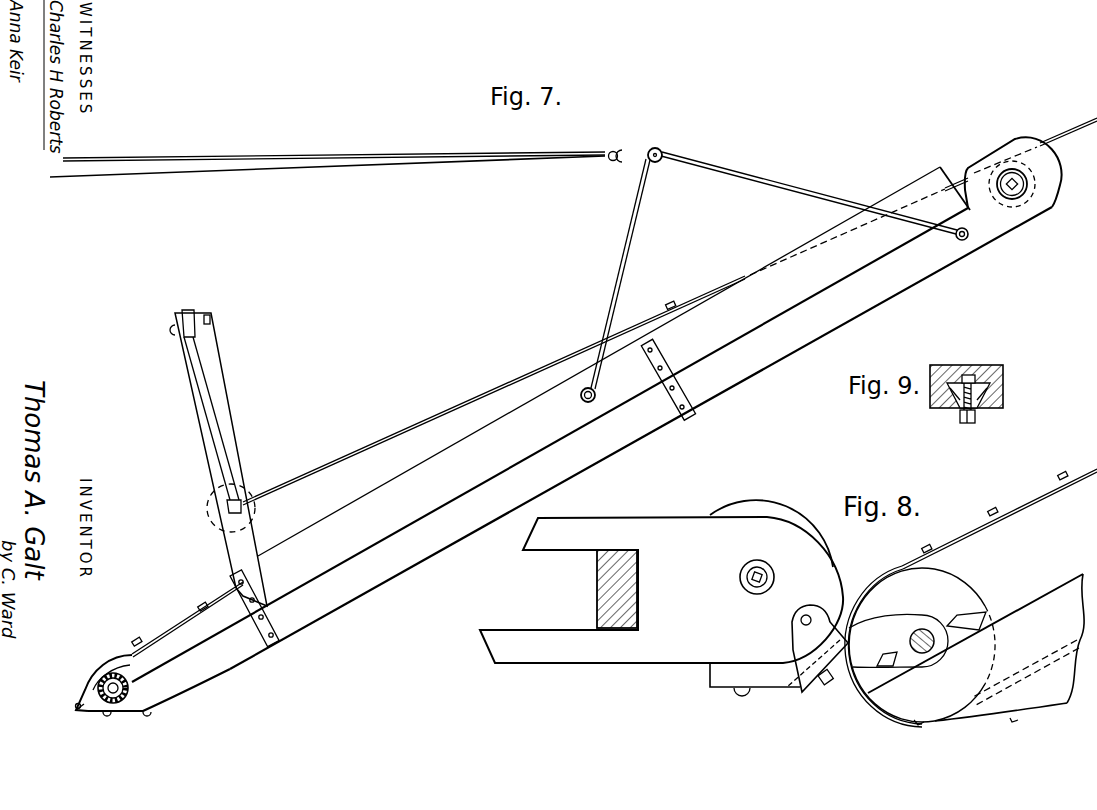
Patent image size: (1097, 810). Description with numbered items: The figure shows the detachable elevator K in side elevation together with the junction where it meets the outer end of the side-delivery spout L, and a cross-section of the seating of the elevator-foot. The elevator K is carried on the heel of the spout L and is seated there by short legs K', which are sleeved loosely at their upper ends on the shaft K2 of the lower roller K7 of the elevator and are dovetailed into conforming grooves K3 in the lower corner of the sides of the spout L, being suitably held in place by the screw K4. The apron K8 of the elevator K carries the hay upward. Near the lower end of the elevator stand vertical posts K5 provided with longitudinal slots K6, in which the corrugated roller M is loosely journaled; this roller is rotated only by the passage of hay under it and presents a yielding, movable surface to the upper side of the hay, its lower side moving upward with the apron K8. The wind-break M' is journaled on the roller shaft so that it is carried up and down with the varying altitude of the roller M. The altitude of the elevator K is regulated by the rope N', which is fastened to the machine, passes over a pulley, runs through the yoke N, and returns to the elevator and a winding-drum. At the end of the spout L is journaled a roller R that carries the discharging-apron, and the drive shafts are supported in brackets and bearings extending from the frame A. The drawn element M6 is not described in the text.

In FIG. 7, the elevator K is at (569, 426).
In FIG. 8, the elevator K is at (976, 644).
In FIG. 7, the short legs K' is at (84, 719).
In FIG. 8, the short legs K' is at (885, 640).
In FIG. 9, the short legs K' is at (980, 403).
In FIG. 7, the shaft K2 is at (125, 678).
In FIG. 8, the shaft K2 is at (924, 630).
In FIG. 8, the grooves K3 is at (817, 648).
In FIG. 9, the grooves K3 is at (987, 383).
In FIG. 8, the screw K4 is at (830, 684).
In FIG. 9, the screw K4 is at (962, 418).
In FIG. 7, the vertical posts K5 is at (225, 443).
In FIG. 7, the longitudinal slots K6 is at (210, 417).
In FIG. 8, the lower roller K7 is at (933, 646).
In FIG. 7, the apron K8 is at (187, 619).
In FIG. 8, the apron K8 is at (971, 598).
In FIG. 7, the corrugated roller M is at (243, 508).
In FIG. 7, the wind-break M' is at (670, 311).
In FIG. 7, the pinion M6 is at (225, 516).
In FIG. 7, the yoke N is at (774, 261).
In FIG. 7, the rope N' is at (327, 156).
In FIG. 8, the frame A is at (600, 584).
In FIG. 8, the side-delivery spout L is at (661, 606).
In FIG. 8, the rollers R is at (771, 523).